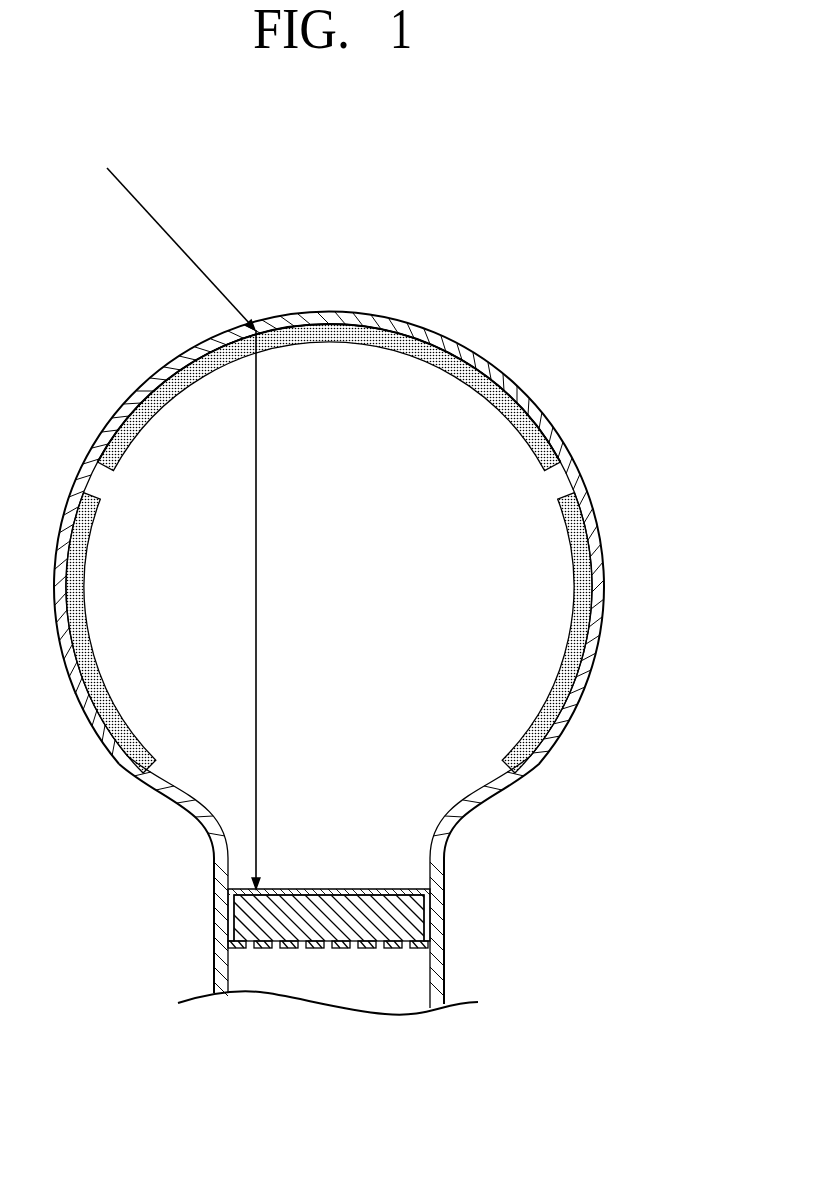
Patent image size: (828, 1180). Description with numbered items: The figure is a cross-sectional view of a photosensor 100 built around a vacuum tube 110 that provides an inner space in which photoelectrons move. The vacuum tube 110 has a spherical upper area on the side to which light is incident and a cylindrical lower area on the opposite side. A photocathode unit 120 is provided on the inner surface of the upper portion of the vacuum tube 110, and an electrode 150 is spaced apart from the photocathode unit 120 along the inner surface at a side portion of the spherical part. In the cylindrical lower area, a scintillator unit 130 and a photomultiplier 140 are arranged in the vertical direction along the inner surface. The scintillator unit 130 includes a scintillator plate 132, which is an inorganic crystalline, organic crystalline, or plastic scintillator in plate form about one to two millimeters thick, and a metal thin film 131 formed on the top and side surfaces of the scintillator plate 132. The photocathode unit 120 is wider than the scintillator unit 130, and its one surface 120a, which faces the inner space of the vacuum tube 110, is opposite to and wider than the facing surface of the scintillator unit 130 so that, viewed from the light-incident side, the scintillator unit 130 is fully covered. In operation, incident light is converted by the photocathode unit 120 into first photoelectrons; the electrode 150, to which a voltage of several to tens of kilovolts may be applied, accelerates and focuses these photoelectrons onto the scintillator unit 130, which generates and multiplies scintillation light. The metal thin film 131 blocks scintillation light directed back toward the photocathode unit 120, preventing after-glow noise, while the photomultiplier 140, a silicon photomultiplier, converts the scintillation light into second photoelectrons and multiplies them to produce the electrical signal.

The photosensor 100 is at (492, 203).
The vacuum tube 110 is at (497, 790).
The photocathode unit 120 is at (329, 384).
The one surface of the photocathode unit 120a is at (374, 349).
The scintillator unit 130 is at (390, 877).
The metal thin film 131 is at (392, 888).
The scintillator plate 132 is at (413, 918).
The photomultiplier 140 is at (392, 950).
The electrode 150 is at (587, 623).